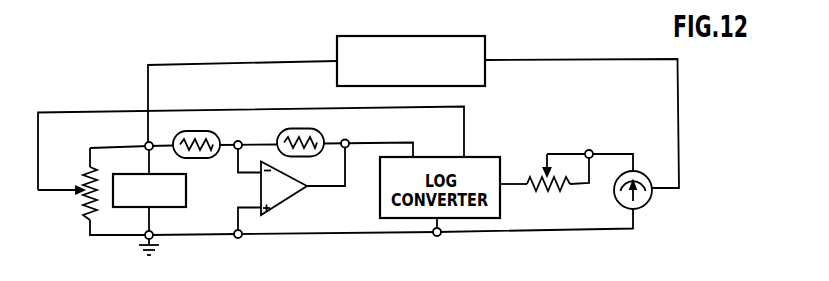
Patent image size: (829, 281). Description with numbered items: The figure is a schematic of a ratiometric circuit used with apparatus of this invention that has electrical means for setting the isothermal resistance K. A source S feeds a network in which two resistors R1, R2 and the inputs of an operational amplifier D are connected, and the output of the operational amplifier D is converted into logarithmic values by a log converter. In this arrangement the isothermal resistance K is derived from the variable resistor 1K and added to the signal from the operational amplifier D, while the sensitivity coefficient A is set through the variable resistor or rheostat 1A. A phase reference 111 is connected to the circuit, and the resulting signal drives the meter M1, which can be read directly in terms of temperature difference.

The variable resistor 1K is at (83, 202).
The source S is at (168, 207).
The first temperature-dependent resistor R1(T1) R1 is at (212, 131).
The second temperature-dependent resistor R2(T2) R2 is at (313, 129).
The operational amplifier D is at (291, 189).
The phase reference 111 is at (486, 40).
The variable resistor 1A is at (565, 192).
The meter M1 is at (664, 168).